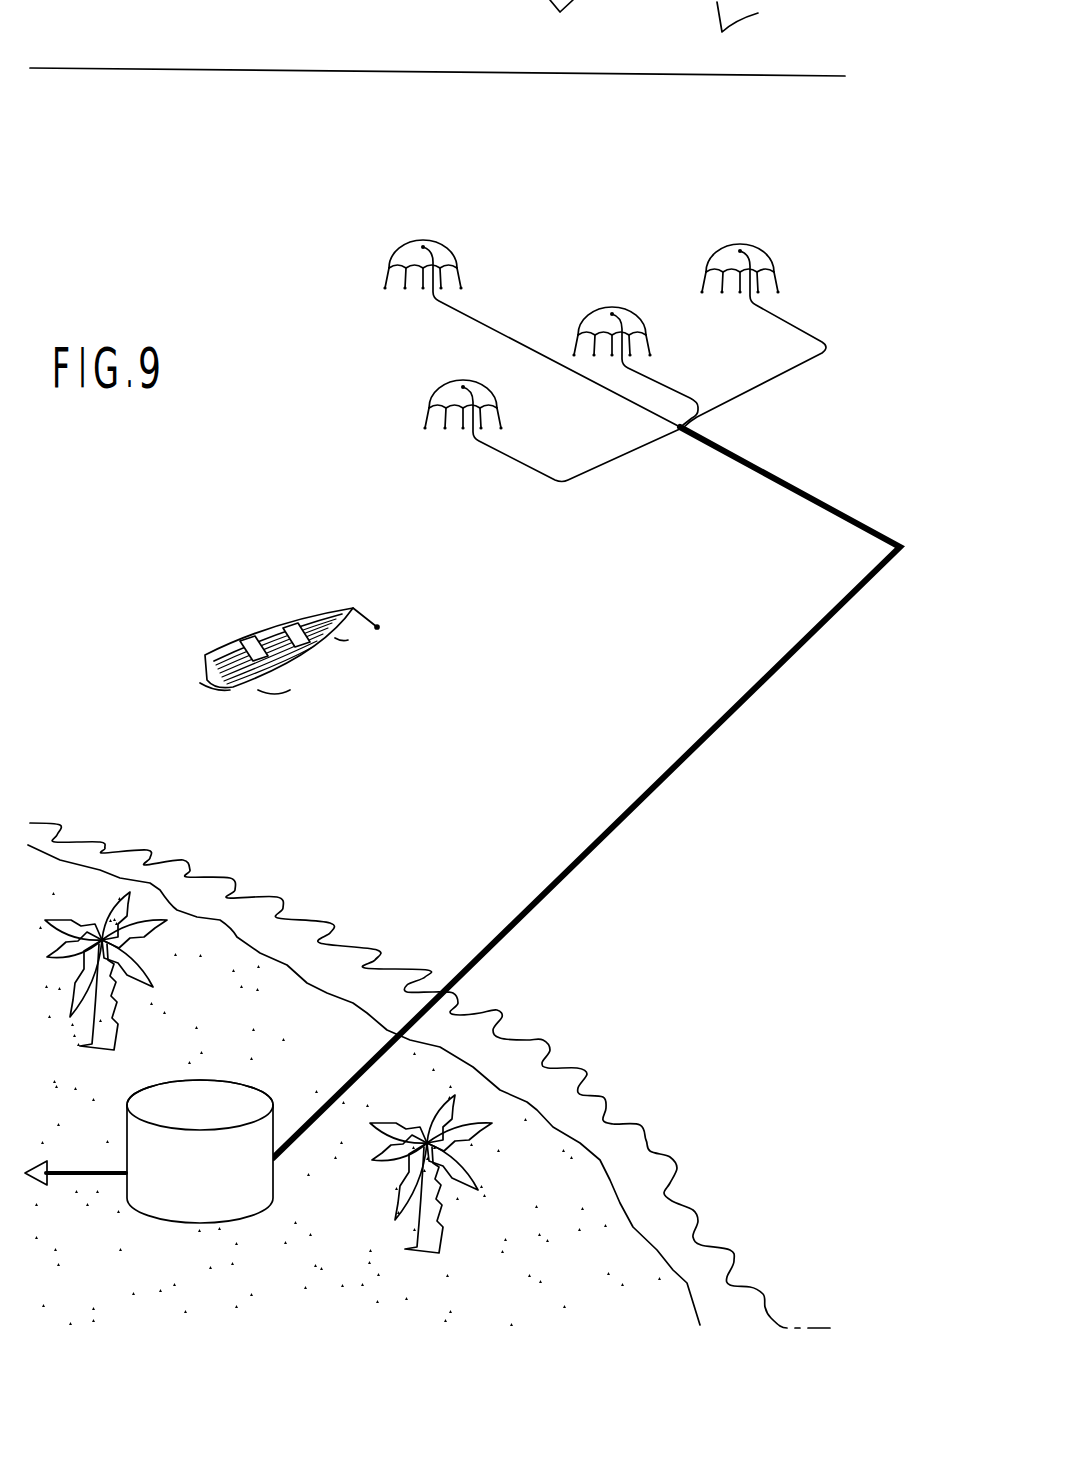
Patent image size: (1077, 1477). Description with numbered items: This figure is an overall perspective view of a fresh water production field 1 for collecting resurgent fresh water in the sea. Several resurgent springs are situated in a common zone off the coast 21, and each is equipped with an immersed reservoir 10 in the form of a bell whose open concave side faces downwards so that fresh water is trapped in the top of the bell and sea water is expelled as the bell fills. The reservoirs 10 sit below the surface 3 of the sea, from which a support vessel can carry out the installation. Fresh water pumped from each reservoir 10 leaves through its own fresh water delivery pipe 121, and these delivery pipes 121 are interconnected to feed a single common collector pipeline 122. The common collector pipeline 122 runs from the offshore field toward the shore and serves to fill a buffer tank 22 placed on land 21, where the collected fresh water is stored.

The installation for producing electricity from wave energy 1 is at (586, 649).
The surface of the sea 3 is at (316, 76).
The immersed reservoir 10 is at (705, 248).
The fresh water delivery pipes 121 is at (598, 392).
The common collector pipeline 122 is at (548, 878).
The coast 21 is at (256, 1029).
The buffer tank 22 is at (288, 1174).